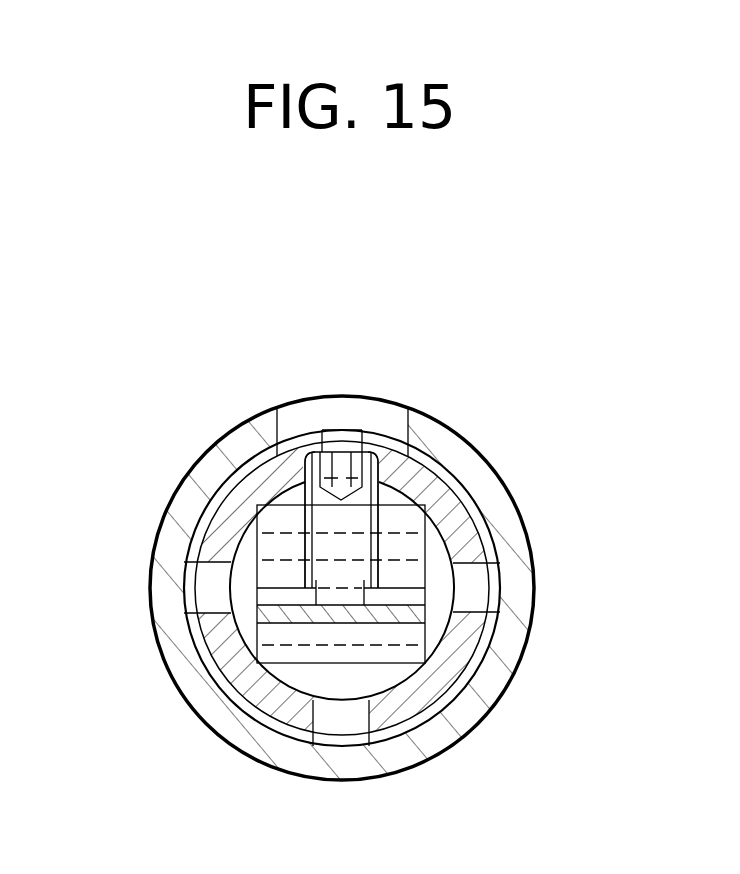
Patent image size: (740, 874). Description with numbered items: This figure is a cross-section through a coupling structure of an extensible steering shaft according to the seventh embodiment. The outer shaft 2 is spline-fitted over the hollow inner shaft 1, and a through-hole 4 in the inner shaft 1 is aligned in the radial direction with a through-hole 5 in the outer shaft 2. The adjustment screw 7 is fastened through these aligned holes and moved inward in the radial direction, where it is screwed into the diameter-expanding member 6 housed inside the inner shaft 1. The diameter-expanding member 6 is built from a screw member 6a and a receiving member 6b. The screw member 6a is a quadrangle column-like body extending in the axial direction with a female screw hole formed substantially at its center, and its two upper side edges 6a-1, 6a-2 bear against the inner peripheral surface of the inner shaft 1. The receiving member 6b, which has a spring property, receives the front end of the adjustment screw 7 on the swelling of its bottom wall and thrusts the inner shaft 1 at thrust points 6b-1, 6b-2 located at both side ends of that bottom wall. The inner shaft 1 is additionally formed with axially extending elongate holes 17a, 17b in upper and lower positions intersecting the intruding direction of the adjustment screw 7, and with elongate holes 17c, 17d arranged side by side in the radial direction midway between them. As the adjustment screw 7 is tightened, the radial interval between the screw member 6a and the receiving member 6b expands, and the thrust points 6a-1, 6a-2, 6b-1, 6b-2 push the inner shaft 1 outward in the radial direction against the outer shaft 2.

The inner shaft 1 is at (505, 472).
The outer shaft 2 is at (517, 540).
The through-hole 4 is at (385, 466).
The through-hole 5 is at (373, 412).
The diameter-expanding member 6 is at (361, 560).
The screw member 6a is at (283, 548).
The upper side edge 6a-1 is at (280, 497).
The upper side edge 6a-2 is at (427, 509).
The receiving member 6b is at (498, 702).
The thrust point 6b-1 is at (192, 700).
The thrust point 6b-2 is at (465, 735).
The adjustment screw 7 is at (270, 452).
The elongate hole 17a is at (342, 447).
The elongate hole 17b is at (338, 723).
The elongate hole 17c is at (208, 588).
The elongate hole 17d is at (468, 597).